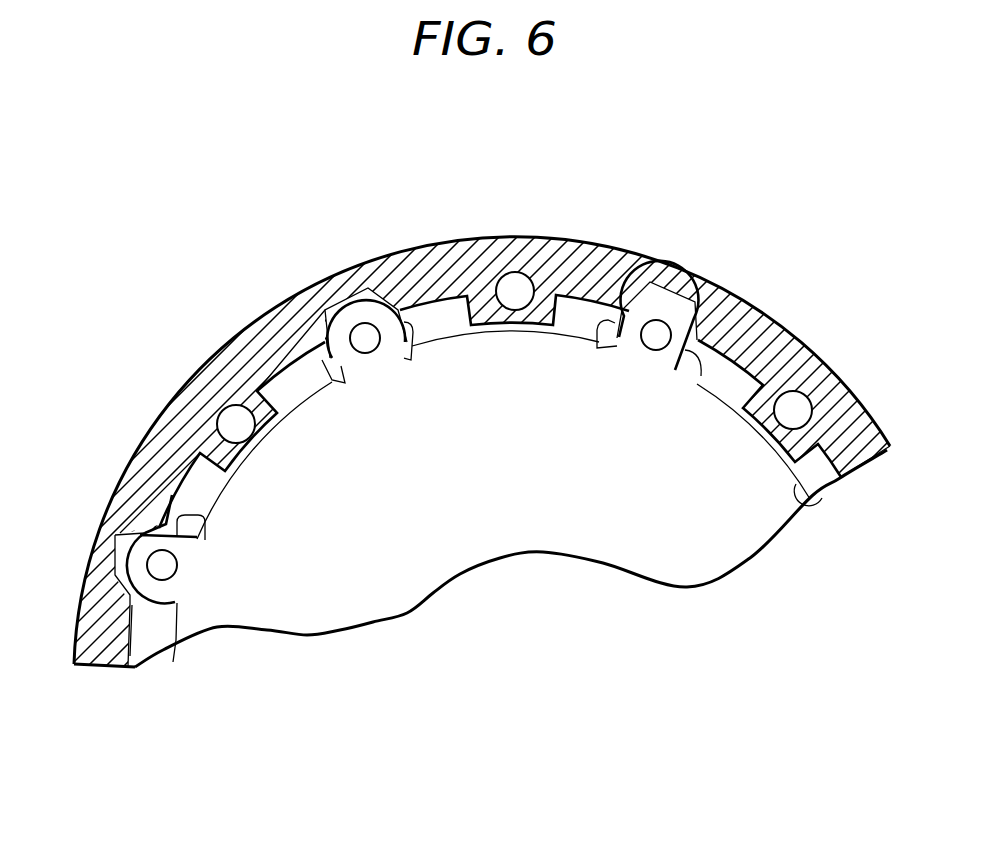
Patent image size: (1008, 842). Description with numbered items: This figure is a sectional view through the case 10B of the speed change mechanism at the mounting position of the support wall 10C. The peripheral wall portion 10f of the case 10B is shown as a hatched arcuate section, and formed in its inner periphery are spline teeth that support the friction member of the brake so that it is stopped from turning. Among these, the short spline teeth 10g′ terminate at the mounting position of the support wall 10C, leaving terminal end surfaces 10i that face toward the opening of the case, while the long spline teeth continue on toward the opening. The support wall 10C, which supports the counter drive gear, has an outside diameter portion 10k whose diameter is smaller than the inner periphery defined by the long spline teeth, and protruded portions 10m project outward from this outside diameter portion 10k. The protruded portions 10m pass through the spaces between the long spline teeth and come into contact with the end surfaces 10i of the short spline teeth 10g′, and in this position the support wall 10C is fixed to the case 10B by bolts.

The case 10B is at (797, 331).
The support wall 10C is at (740, 547).
The peripheral wall portion 10f is at (243, 357).
The short spline teeth 10g′ is at (332, 378).
The end surfaces 10i is at (410, 352).
The outside diameter portion 10k is at (827, 485).
The protruded portions 10m is at (350, 315).